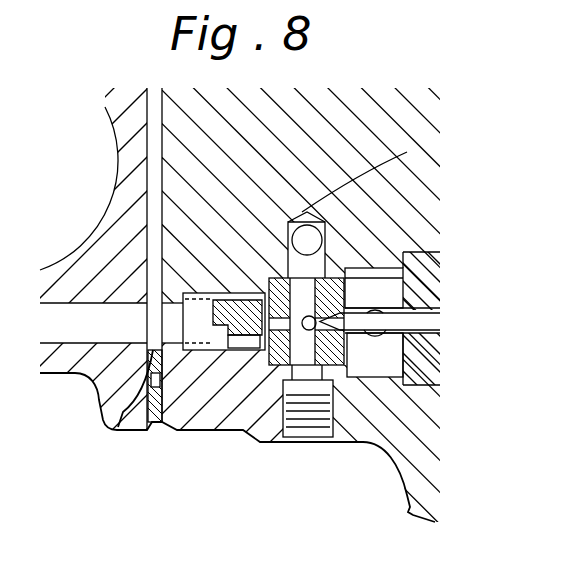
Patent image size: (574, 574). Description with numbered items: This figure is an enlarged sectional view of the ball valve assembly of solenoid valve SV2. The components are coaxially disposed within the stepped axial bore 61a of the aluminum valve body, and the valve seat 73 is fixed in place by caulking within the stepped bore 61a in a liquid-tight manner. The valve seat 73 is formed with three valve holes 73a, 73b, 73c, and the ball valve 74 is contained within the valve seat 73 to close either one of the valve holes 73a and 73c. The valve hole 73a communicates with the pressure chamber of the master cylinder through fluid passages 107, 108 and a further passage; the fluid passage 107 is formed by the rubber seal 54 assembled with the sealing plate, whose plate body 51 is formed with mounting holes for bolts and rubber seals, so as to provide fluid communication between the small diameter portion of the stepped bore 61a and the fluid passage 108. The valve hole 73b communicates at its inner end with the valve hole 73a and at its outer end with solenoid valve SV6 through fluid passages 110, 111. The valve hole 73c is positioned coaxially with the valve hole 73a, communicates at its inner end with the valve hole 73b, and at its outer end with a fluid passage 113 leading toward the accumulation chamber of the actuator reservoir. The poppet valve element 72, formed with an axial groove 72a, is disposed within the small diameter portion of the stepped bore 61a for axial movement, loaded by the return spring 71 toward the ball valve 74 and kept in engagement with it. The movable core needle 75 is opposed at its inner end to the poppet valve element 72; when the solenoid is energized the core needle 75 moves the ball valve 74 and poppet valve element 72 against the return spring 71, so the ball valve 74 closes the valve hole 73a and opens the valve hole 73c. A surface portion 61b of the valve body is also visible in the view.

The fluid passage 107 is at (100, 247).
The fluid passage 108 is at (60, 328).
The rubber seal 54 is at (133, 400).
The plate body 51 is at (158, 424).
The return spring 71 is at (193, 352).
The poppet valve element 72 is at (232, 338).
The axial groove 72a is at (250, 350).
The valve seat 73 is at (280, 380).
The valve hole 73a is at (262, 366).
The valve hole 73b is at (325, 268).
The valve hole 73c is at (413, 377).
The ball valve 74 is at (327, 438).
The movable core needle 75 is at (430, 322).
The fluid passage 110 is at (325, 235).
The fluid passage 111 is at (411, 150).
The fluid passage 113 is at (437, 293).
The stepped axial bore 61a is at (392, 378).
The body flange portion 61b is at (440, 274).